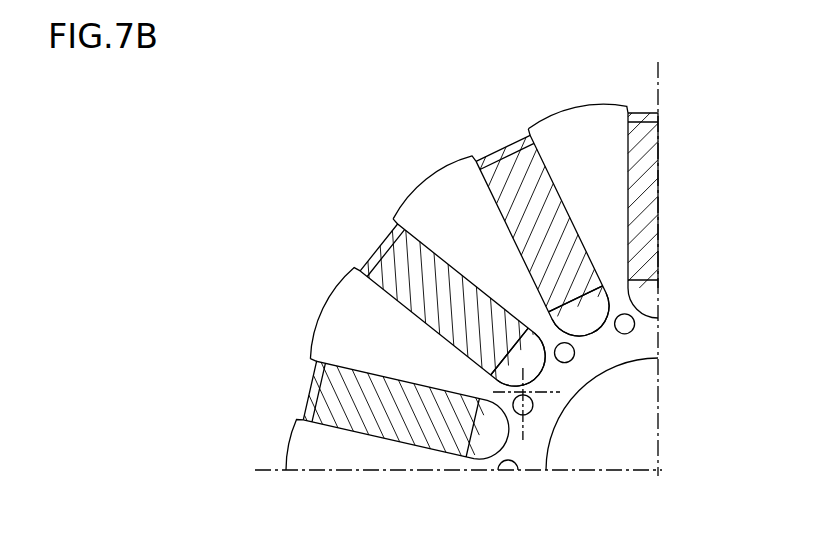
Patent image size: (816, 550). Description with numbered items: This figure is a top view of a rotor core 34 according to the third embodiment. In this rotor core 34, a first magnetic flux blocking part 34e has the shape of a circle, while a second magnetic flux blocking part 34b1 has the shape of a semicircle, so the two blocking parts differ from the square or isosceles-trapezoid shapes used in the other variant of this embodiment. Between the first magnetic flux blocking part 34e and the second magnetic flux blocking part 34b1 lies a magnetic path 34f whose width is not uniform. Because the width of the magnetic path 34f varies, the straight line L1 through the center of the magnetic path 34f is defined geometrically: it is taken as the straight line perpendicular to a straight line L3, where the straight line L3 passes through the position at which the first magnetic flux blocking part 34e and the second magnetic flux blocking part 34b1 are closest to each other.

The rotor core 34 is at (404, 172).
The second magnetic flux blocking part 34b1 is at (585, 322).
The first magnetic flux blocking part 34e is at (568, 362).
The magnetic path 34f is at (582, 341).
The straight line L1 is at (512, 388).
The straight line L3 is at (524, 436).